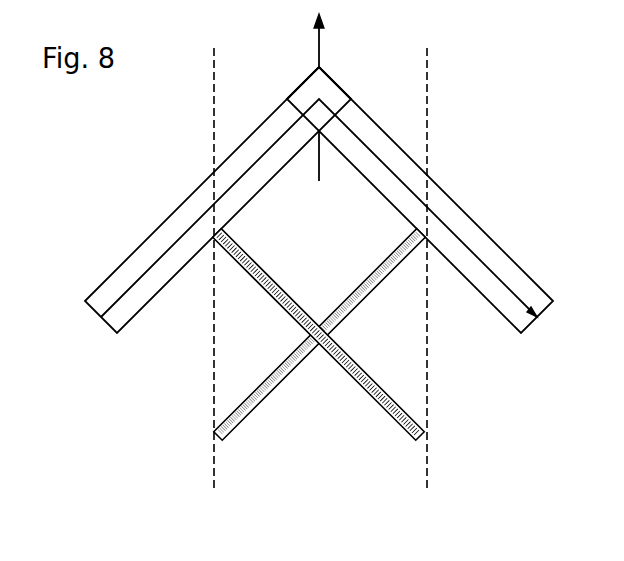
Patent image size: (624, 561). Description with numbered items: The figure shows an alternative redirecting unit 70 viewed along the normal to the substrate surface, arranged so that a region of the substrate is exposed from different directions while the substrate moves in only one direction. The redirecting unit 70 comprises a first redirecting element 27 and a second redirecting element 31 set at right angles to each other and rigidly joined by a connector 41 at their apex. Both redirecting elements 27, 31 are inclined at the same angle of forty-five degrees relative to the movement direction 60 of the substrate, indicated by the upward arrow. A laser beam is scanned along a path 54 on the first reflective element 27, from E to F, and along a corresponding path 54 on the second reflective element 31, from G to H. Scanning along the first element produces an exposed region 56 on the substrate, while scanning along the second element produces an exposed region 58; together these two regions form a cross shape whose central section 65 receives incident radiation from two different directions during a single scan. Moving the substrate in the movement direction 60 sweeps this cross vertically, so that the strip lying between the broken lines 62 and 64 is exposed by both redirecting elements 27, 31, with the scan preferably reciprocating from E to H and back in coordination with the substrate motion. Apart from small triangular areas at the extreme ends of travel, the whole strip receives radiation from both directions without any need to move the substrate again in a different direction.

The first redirecting element 27 is at (132, 267).
The second redirecting element 31 is at (528, 285).
The connector 41 is at (335, 88).
The path 54 is at (180, 237).
The region 56 is at (390, 255).
The region 58 is at (247, 248).
The movement direction 60 is at (318, 53).
The broken line 62 is at (213, 353).
The broken line 64 is at (427, 353).
The central section 65 is at (310, 327).
The redirecting unit 70 is at (122, 438).